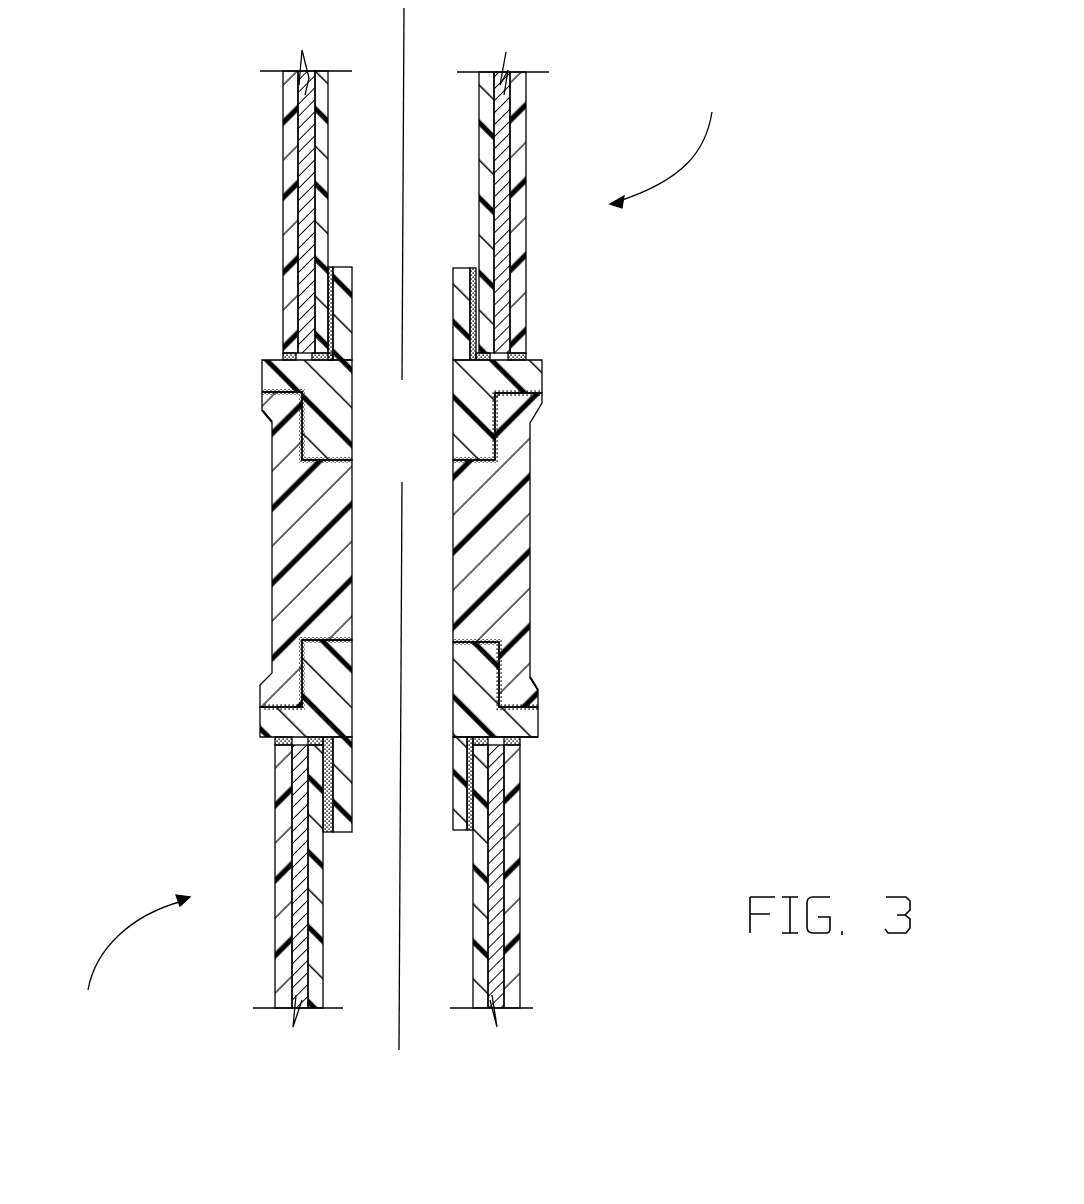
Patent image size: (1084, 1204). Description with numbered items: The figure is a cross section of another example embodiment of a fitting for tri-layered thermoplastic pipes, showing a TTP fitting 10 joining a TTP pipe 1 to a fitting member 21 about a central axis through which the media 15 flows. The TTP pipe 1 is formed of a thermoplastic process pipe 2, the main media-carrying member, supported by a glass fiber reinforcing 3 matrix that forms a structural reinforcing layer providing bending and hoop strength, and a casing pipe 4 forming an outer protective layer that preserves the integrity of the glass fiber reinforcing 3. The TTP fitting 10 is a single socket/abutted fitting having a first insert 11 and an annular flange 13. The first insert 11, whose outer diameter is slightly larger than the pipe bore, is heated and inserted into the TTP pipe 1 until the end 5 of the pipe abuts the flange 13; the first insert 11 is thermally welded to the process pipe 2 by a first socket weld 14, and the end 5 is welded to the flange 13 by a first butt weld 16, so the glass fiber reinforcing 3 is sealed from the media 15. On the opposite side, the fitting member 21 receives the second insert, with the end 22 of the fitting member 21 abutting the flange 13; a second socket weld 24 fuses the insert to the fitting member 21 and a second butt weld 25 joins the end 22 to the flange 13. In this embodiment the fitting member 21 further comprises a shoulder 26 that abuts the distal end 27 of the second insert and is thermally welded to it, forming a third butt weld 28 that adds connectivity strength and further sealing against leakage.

The TTP pipe 1 is at (395, 552).
The process pipe 2 is at (322, 135).
The glass fiber reinforcing 3 is at (307, 120).
The casing pipe 4 is at (292, 243).
The end 5 is at (280, 755).
The TTP fitting 10 is at (470, 680).
The first insert 11 is at (345, 278).
The annular flange 13 is at (538, 738).
The first socket weld 14 is at (332, 326).
The media 15 is at (392, 578).
The first butt weld 16 is at (316, 737).
The fitting member 21 is at (313, 597).
The end 22 is at (270, 416).
The second socket weld 24 is at (497, 417).
The second butt weld 25 is at (260, 393).
The shoulder 26 is at (300, 477).
The distal end 27 is at (340, 456).
The third butt weld 28 is at (332, 637).